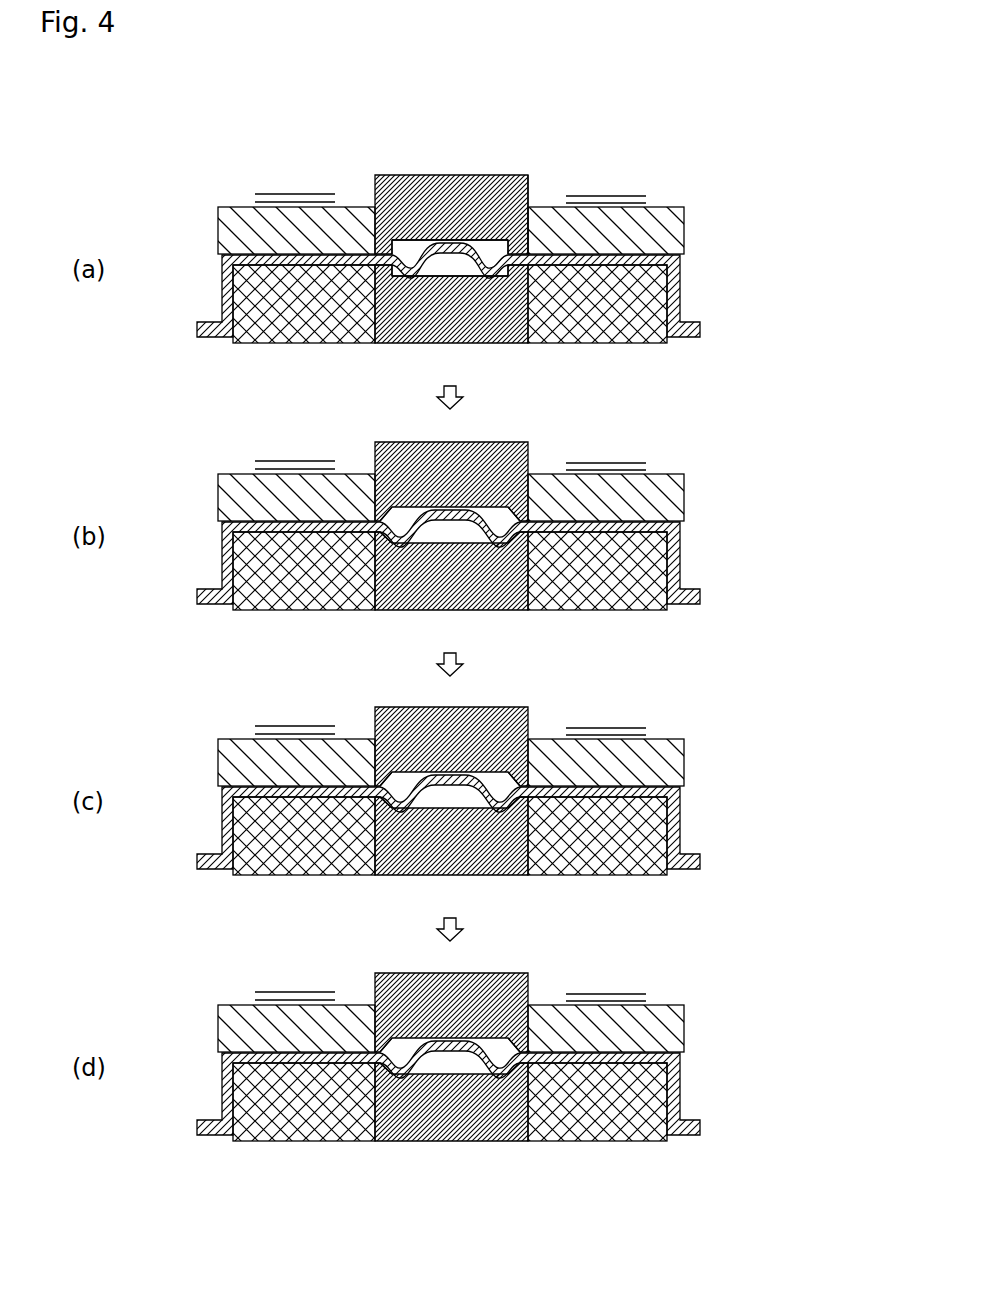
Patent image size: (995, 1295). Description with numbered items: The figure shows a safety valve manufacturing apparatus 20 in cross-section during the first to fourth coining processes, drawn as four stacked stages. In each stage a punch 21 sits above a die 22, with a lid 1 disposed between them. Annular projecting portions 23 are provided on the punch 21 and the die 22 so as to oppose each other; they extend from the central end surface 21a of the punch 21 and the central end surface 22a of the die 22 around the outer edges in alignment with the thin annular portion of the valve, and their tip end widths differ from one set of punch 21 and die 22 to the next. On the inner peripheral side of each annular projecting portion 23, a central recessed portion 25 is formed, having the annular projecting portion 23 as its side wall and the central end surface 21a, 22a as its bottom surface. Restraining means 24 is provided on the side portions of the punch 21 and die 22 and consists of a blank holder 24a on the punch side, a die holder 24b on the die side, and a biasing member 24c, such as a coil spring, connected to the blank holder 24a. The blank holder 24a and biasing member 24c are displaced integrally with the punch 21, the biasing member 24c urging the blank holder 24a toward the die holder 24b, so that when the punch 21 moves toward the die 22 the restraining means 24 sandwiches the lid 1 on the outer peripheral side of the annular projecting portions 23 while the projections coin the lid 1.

The lid 1 is at (680, 292).
The safety valve manufacturing apparatus 20 is at (722, 232).
The punch 21 is at (461, 215).
The central end surface of punch 21a is at (438, 240).
The die 22 is at (498, 290).
The central end surface of die 22a is at (460, 278).
The annular projecting portion 23 is at (396, 238).
The restraining means 24 is at (440, 573).
The blank holder 24a is at (238, 207).
The die holder 24b is at (243, 343).
The biasing member 24c is at (280, 193).
The central recessed portion 25 is at (530, 175).